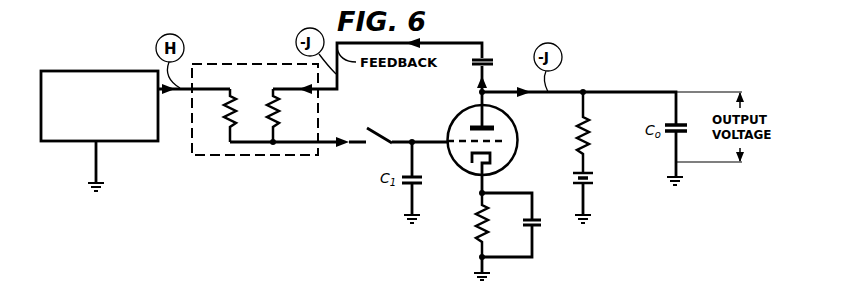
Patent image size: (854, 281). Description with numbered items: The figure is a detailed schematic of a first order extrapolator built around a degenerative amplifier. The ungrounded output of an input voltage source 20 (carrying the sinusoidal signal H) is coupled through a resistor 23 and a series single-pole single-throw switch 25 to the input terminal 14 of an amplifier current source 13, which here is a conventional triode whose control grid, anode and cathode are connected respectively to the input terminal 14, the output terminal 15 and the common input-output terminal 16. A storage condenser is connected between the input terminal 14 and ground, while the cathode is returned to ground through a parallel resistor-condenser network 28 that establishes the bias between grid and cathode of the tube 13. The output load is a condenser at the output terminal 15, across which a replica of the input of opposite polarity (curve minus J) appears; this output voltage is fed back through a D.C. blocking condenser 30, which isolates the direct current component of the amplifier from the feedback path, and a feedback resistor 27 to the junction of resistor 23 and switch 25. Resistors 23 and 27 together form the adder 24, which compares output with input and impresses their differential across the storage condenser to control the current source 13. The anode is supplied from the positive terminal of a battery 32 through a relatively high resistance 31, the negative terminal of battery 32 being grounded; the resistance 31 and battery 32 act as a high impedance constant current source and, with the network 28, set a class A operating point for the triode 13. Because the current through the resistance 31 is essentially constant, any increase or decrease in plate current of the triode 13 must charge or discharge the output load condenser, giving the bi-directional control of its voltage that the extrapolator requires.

The input voltage source 20 is at (96, 71).
The adder 24 is at (250, 64).
The resistor 23 is at (226, 121).
The resistor 27 is at (283, 120).
The single-pole single-throw switch 25 is at (380, 122).
The amplifier current source 13 is at (484, 144).
The input terminal 14 is at (447, 140).
The output terminal 15 is at (480, 92).
The common input-output terminal 16 is at (480, 187).
The D.C. blocking condenser 30 is at (483, 59).
The parallel resistor-condenser network 28 is at (514, 230).
The resistance 31 is at (580, 146).
The source of unidirectional operating potential 32 is at (597, 176).